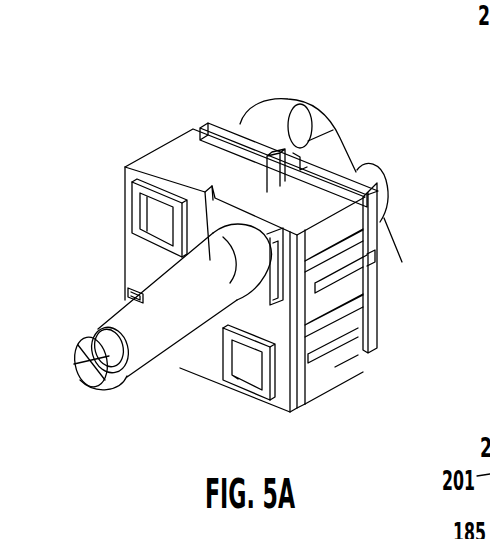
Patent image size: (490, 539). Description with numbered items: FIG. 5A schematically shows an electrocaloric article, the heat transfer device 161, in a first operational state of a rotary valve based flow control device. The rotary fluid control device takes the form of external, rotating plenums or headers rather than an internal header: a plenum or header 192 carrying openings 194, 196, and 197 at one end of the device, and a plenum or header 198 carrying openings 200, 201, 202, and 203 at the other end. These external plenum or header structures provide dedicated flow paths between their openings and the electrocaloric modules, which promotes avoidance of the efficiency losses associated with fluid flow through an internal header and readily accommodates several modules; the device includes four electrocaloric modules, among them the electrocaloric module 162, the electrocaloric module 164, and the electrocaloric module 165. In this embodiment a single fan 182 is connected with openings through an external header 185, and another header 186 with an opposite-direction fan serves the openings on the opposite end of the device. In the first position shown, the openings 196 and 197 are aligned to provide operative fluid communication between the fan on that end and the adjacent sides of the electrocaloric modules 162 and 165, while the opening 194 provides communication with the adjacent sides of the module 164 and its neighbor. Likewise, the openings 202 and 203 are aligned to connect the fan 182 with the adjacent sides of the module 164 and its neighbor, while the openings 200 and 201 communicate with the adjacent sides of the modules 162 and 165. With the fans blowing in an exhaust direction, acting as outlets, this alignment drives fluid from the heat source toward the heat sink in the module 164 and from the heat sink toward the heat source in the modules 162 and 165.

The heat transfer device 161 is at (362, 136).
The electrocaloric module 162 is at (340, 344).
The electrocaloric module 164 is at (340, 250).
The electrocaloric module 165 is at (192, 153).
The fan 182 is at (76, 349).
The external header 185 is at (116, 316).
The header 186 is at (317, 110).
The plenum or header 192 is at (220, 124).
The opening 194 is at (378, 212).
The opening 196 is at (378, 328).
The opening 197 is at (244, 116).
The plenum or header 198 is at (143, 163).
The opening 200 is at (220, 382).
The opening 201 is at (150, 223).
The opening 202 is at (243, 222).
The opening 203 is at (124, 292).